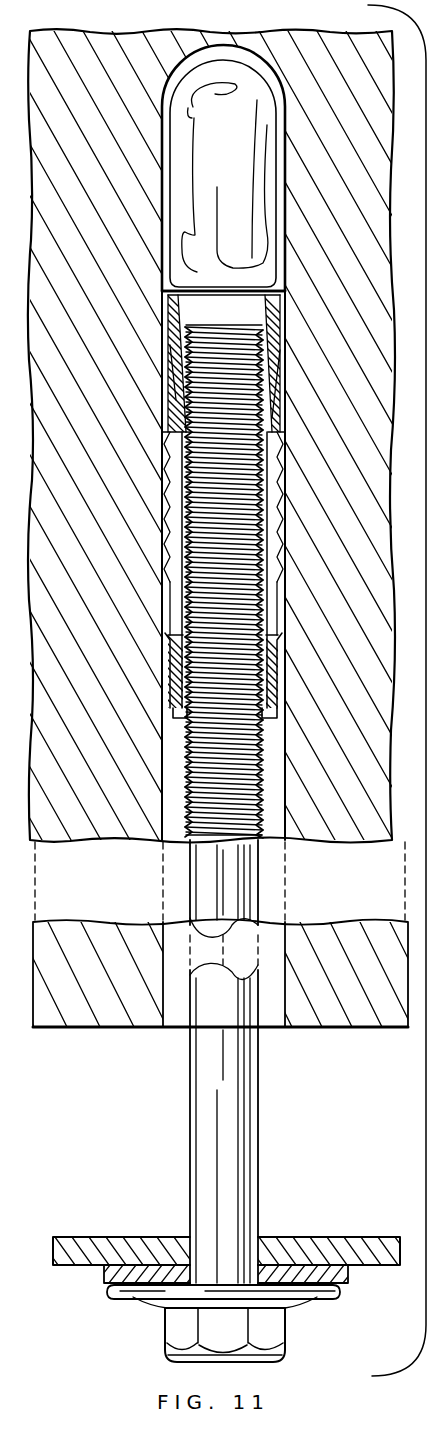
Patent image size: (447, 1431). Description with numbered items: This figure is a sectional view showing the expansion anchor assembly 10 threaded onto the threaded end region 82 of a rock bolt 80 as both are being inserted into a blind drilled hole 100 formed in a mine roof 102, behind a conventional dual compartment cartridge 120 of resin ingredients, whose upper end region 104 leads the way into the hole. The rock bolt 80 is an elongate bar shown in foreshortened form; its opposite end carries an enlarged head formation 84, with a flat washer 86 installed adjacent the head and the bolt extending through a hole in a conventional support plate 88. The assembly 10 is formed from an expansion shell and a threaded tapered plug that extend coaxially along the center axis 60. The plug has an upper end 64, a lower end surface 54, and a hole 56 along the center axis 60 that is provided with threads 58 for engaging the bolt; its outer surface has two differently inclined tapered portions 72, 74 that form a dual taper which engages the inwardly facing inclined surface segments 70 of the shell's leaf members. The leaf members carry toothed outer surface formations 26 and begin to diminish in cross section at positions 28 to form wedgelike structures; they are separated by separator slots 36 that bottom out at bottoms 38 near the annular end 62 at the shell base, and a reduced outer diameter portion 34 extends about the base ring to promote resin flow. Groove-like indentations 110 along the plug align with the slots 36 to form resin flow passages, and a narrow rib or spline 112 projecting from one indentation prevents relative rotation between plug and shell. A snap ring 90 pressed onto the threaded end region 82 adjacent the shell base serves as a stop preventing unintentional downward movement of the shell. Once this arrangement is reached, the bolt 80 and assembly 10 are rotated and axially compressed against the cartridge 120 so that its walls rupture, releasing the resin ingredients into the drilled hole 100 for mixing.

The expansion anchor assembly 10 is at (140, 359).
The toothed outer surface formations 26 is at (290, 479).
The positions where leaf members begin to diminish in cross section 28 is at (292, 543).
The reduced outer diameter portion 34 is at (285, 684).
The separator slots 36 is at (166, 573).
The bottoms of the separator slots 38 is at (172, 657).
The lower end surface 54 is at (173, 434).
The hole 56 is at (192, 300).
The threads 58 is at (240, 345).
The center axis 60 is at (232, 1049).
The end 62 is at (270, 730).
The end 64 is at (268, 287).
The inclined surface segments 70 is at (200, 457).
The tapered outer surface portion 72 is at (283, 387).
The tapered outer surface portion 74 is at (291, 317).
The rock bolt 80 is at (262, 1096).
The threaded end region 82 is at (185, 810).
The head formation 84 is at (283, 1327).
The flat washer 86 is at (350, 1278).
The support plate 88 is at (78, 1265).
The snap ring 90 is at (181, 722).
The blind drilled hole 100 is at (280, 201).
The mine roof 102 is at (94, 1031).
The cap 104 is at (220, 47).
The groove-like indentations 110 is at (178, 376).
The rib or spline 112 is at (172, 402).
The dual compartment cartridge 120 is at (240, 156).